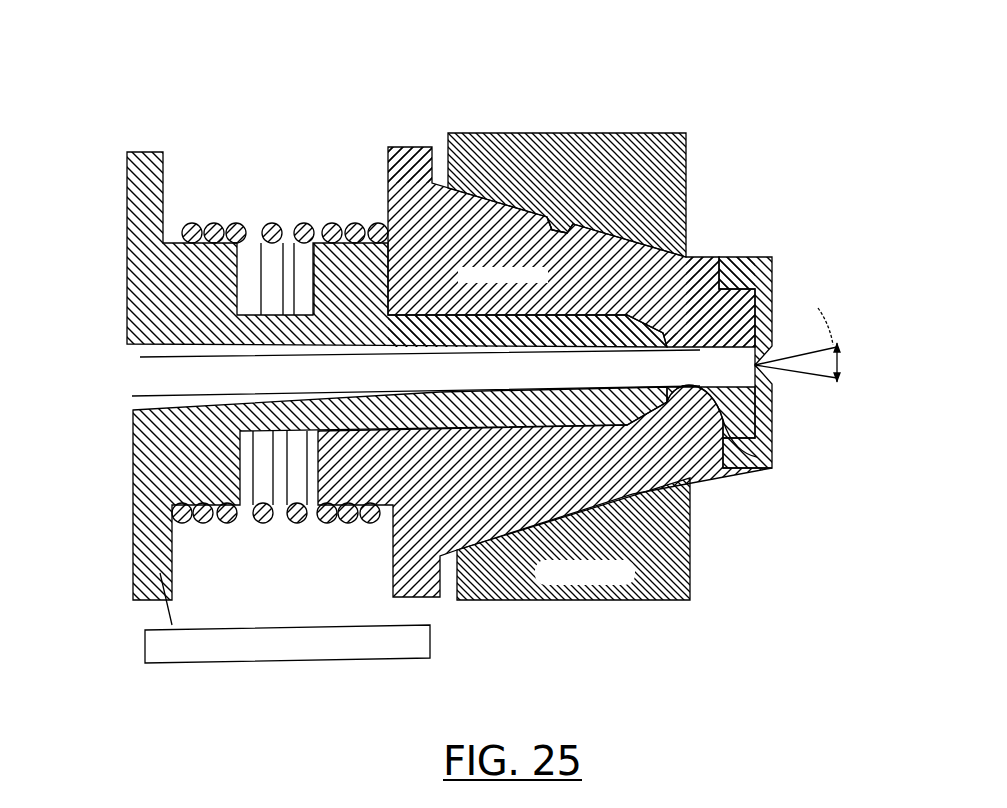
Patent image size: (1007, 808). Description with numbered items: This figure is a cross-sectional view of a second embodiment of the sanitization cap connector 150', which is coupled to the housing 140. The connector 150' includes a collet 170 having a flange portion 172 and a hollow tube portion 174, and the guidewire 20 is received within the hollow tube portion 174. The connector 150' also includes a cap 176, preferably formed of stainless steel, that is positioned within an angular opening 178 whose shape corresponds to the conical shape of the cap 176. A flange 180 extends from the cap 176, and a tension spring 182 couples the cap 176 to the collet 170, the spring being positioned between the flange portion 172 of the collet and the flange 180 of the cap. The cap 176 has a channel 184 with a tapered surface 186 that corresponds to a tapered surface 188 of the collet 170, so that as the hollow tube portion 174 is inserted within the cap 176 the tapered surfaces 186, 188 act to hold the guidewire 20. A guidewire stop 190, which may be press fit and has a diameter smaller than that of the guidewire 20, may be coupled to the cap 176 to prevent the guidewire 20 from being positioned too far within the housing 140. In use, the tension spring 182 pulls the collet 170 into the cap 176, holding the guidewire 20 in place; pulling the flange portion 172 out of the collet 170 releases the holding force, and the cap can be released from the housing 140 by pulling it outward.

The sanitization cap connector 150' is at (456, 341).
The guidewire 20 is at (143, 384).
The housing 140 is at (690, 572).
The collet 170 is at (423, 420).
The flange portion 172 is at (130, 152).
The hollow tube portion 174 is at (418, 332).
The cap 176 is at (640, 313).
The angular opening 178 is at (562, 230).
The flange 180 is at (386, 148).
The tension spring 182 is at (188, 228).
The channel 184 is at (738, 283).
The tapered surface 186 is at (757, 457).
The tapered surface 188 is at (672, 340).
The guidewire stop 190 is at (772, 258).